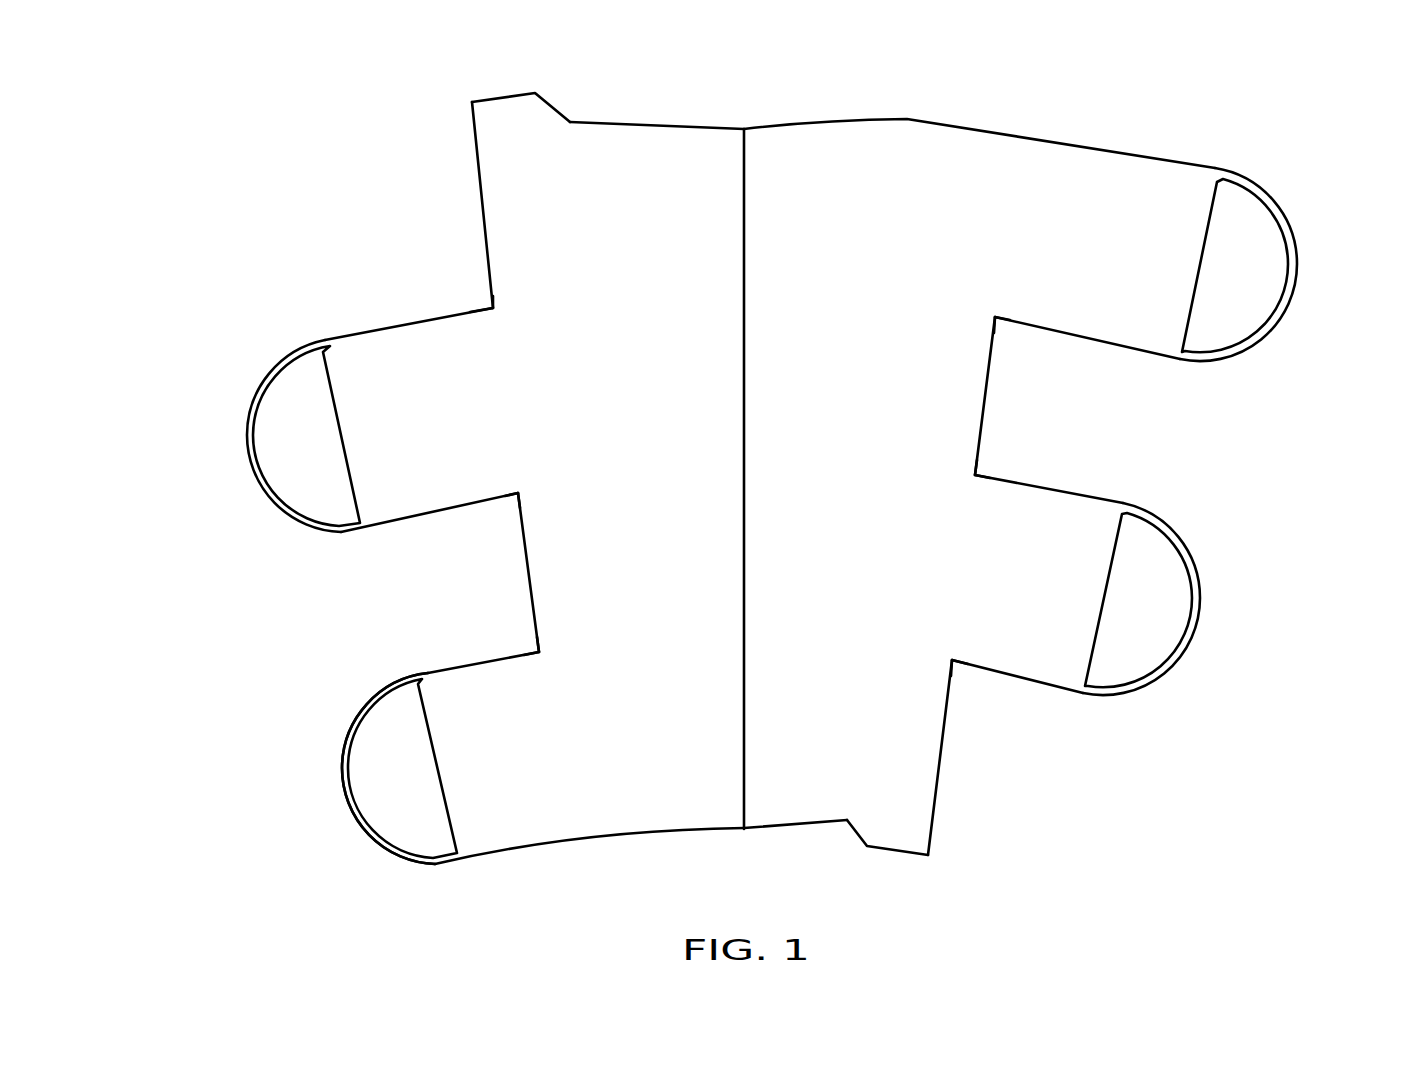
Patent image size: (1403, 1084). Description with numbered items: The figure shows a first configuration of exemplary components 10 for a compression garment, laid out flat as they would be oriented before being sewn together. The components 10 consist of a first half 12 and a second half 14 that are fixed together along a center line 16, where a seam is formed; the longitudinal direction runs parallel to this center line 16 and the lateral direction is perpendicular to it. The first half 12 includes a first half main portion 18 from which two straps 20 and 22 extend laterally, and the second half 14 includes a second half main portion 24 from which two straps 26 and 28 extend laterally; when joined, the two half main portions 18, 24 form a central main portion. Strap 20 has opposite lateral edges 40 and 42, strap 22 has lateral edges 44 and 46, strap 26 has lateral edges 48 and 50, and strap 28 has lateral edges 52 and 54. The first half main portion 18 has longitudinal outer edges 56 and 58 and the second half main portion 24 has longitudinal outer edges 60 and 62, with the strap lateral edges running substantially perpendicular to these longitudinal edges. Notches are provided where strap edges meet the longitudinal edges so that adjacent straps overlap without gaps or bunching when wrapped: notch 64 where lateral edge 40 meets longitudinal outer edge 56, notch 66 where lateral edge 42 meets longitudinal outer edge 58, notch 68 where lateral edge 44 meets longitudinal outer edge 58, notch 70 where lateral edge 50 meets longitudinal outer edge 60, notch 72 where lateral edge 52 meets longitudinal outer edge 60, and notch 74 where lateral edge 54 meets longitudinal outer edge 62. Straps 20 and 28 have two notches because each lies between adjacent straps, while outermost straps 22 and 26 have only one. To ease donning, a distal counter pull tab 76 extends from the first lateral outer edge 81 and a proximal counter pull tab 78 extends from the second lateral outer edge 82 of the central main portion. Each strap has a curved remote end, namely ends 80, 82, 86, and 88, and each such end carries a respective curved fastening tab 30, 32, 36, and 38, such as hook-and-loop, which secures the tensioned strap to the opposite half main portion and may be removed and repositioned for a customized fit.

The components 10 is at (928, 97).
The first half 12 is at (602, 863).
The second half 14 is at (898, 885).
The center line 16 is at (747, 183).
The first half main portion 18 is at (511, 215).
The strap 20 is at (360, 360).
The strap 22 is at (443, 688).
The second half main portion 24 is at (968, 198).
The strap 26 is at (1173, 180).
The strap 28 is at (1082, 520).
The fastening tab 30 is at (272, 448).
The fastening tab 32 is at (367, 800).
The fastening tab 36 is at (1263, 230).
The fastening tab 38 is at (1174, 597).
The lateral edge 40 is at (393, 320).
The lateral edge 42 is at (404, 528).
The lateral edge 44 is at (476, 662).
The lateral edge 46 is at (478, 866).
The lateral edge 48 is at (1132, 148).
The lateral edge 50 is at (1127, 352).
The lateral edge 52 is at (1032, 483).
The lateral edge 54 is at (1020, 684).
The longitudinal outer edge 56 is at (476, 146).
The longitudinal outer edge 58 is at (530, 580).
The longitudinal outer edge 60 is at (990, 371).
The longitudinal outer edge 62 is at (940, 776).
The notch 64 is at (493, 310).
The notch 66 is at (520, 491).
The notch 68 is at (536, 654).
The notch 70 is at (995, 310).
The notch 72 is at (976, 486).
The notch 74 is at (954, 660).
The distal counter pull tab 76 is at (505, 93).
The proximal counter pull tab 78 is at (920, 856).
The end 80 is at (248, 410).
The first lateral outer edge 81 is at (660, 122).
The second lateral outer edge 82 is at (343, 768).
The end 86 is at (1298, 266).
The end 88 is at (1199, 617).